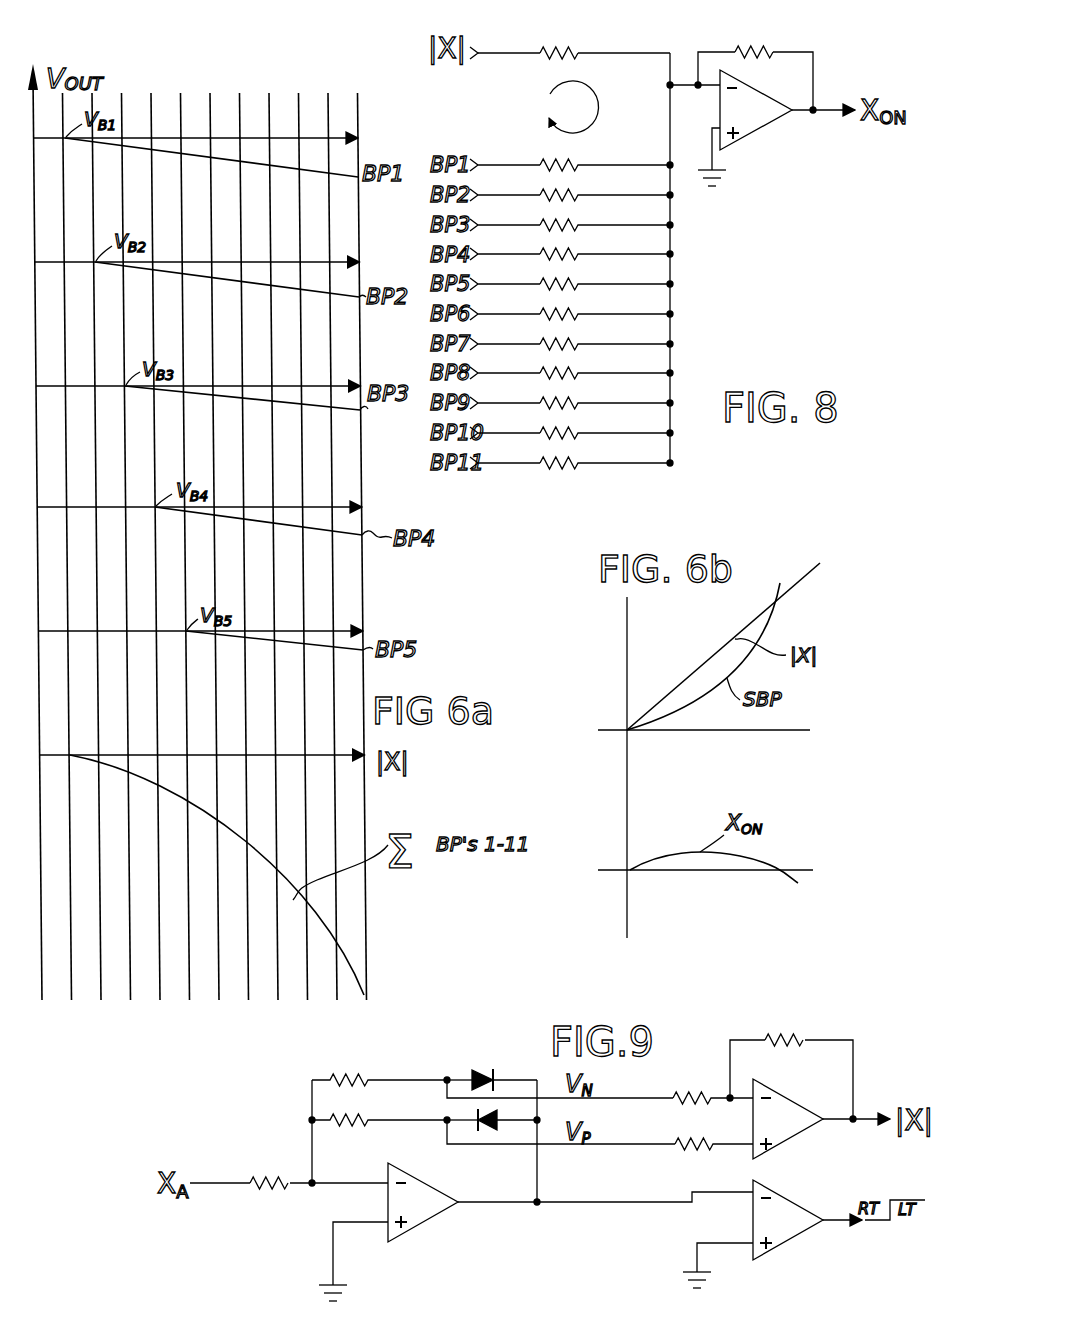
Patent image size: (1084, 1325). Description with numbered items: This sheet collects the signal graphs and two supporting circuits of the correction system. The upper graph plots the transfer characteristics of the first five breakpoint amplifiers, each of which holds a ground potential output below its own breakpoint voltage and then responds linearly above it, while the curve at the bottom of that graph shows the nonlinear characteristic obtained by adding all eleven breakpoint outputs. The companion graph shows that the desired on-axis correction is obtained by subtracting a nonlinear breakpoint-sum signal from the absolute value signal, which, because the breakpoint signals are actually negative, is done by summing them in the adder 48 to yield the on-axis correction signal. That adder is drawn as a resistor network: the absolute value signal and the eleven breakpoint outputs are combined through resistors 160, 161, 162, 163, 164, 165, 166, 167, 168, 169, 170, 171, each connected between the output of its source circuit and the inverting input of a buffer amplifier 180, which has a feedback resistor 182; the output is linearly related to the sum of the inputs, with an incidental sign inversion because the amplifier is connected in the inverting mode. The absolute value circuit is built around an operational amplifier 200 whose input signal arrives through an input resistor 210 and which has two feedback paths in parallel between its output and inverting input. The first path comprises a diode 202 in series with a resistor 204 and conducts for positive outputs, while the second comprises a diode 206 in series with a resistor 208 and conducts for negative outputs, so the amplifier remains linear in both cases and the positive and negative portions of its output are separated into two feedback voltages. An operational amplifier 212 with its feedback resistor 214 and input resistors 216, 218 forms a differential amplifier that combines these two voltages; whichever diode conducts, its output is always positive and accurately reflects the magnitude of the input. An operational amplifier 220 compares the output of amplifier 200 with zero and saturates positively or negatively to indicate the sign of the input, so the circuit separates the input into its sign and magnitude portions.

In FIG. 8, the adder 48 is at (731, 321).
In FIG. 8, the resistor 160 is at (566, 40).
In FIG. 8, the resistor 161 is at (578, 152).
In FIG. 8, the resistor 162 is at (578, 182).
In FIG. 8, the resistor 163 is at (578, 212).
In FIG. 8, the resistor 164 is at (578, 241).
In FIG. 8, the resistor 165 is at (578, 271).
In FIG. 8, the resistor 166 is at (578, 301).
In FIG. 8, the resistor 167 is at (578, 331).
In FIG. 8, the resistor 168 is at (578, 360).
In FIG. 8, the resistor 169 is at (578, 390).
In FIG. 8, the resistor 170 is at (578, 420).
In FIG. 8, the resistor 171 is at (578, 450).
In FIG. 8, the buffer amplifier 180 is at (756, 118).
In FIG. 8, the feedback resistor 182 is at (758, 45).
In FIG. 9, the operational amplifier 200 is at (418, 1210).
In FIG. 9, the diode 202 is at (486, 1133).
In FIG. 9, the resistor 204 is at (350, 1113).
In FIG. 9, the diode 206 is at (478, 1073).
In FIG. 9, the resistor 208 is at (364, 1074).
In FIG. 9, the input resistor 210 is at (250, 1180).
In FIG. 9, the operational amplifier 212 is at (784, 1130).
In FIG. 9, the feedback resistor 214 is at (787, 1034).
In FIG. 9, the input resistor 216 is at (676, 1092).
In FIG. 9, the input resistor 218 is at (678, 1138).
In FIG. 9, the operational amplifier 220 is at (784, 1232).